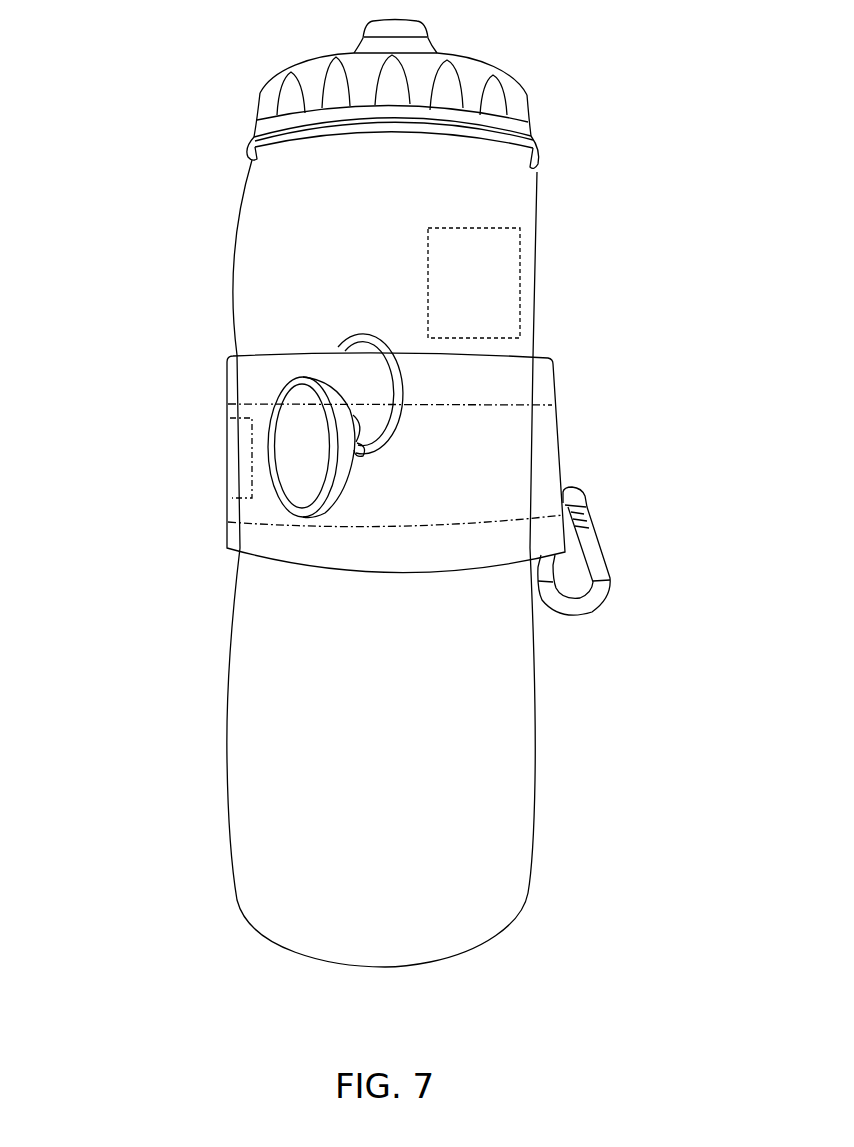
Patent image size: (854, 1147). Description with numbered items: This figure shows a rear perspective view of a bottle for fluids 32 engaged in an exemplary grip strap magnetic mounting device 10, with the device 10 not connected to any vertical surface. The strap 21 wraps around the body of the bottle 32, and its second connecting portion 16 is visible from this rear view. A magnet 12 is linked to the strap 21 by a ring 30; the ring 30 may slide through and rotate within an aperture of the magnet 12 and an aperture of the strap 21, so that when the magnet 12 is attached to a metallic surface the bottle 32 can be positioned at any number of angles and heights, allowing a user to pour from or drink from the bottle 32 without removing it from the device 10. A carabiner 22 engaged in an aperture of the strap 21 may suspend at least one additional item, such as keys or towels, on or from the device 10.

The grip strap magnetic mounting device 10 is at (354, 494).
The magnet 12 is at (305, 463).
The second connecting portion 16 is at (492, 428).
The strap 21 is at (403, 426).
The carabiner 22 is at (610, 588).
The ring 30 is at (357, 340).
The bottle for fluids 32 is at (521, 273).